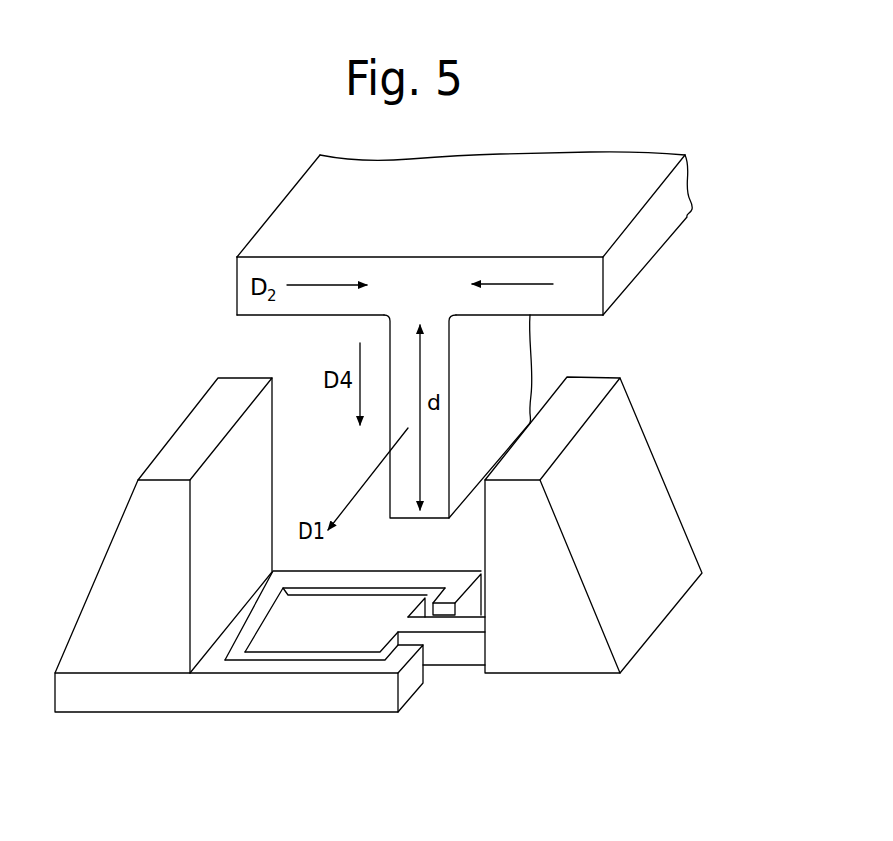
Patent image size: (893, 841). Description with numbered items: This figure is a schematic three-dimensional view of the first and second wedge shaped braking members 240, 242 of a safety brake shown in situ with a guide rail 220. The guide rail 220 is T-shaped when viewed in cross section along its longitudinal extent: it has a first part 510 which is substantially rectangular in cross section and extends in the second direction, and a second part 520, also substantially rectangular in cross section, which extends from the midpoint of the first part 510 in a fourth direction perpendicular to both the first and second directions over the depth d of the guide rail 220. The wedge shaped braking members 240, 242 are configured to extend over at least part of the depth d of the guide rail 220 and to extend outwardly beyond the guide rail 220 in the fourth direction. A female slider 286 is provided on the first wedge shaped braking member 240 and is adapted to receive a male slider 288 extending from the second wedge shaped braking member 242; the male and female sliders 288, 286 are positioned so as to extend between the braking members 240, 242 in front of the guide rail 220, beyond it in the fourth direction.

The guide rail 220 is at (603, 284).
The first part 510 is at (237, 303).
The second part 520 is at (445, 350).
The first wedge shaped braking member 240 is at (163, 463).
The second wedge shaped braking member 242 is at (628, 462).
The female slider 286 is at (386, 700).
The male slider 288 is at (302, 640).